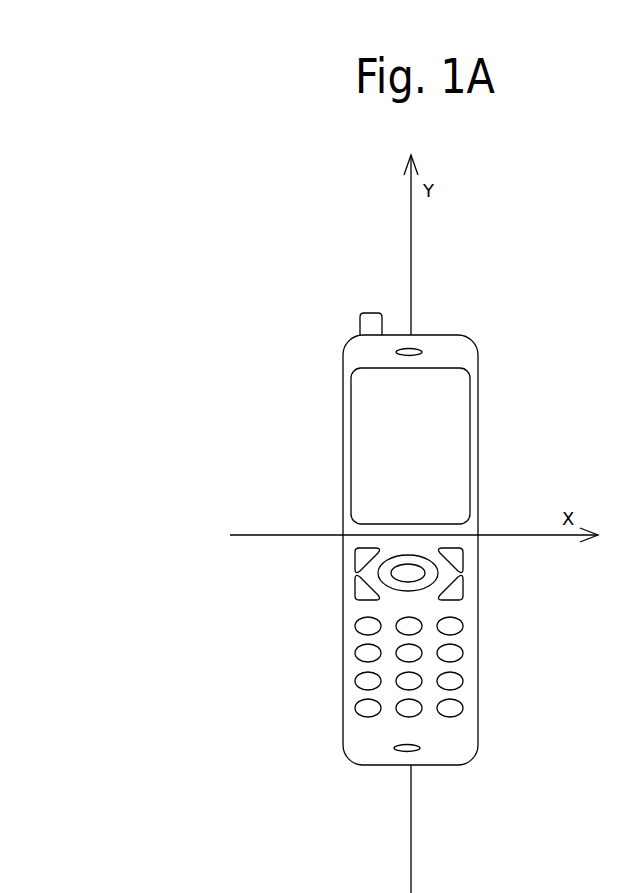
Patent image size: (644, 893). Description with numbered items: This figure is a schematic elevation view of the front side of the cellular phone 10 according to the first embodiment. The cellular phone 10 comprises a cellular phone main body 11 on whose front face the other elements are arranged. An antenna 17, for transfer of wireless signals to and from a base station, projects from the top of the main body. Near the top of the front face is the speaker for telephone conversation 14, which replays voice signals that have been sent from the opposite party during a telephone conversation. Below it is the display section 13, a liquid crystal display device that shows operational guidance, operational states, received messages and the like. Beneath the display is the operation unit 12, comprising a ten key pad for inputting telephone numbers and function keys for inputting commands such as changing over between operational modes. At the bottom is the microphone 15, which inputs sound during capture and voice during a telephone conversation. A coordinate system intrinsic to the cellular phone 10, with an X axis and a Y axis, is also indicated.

The cellular phone 10 is at (477, 283).
The cellular phone main body 11 is at (478, 442).
The operation unit 12 is at (465, 617).
The display section 13 is at (351, 402).
The speaker for telephone conversation 14 is at (422, 352).
The microphone 15 is at (394, 748).
The antenna 17 is at (368, 313).